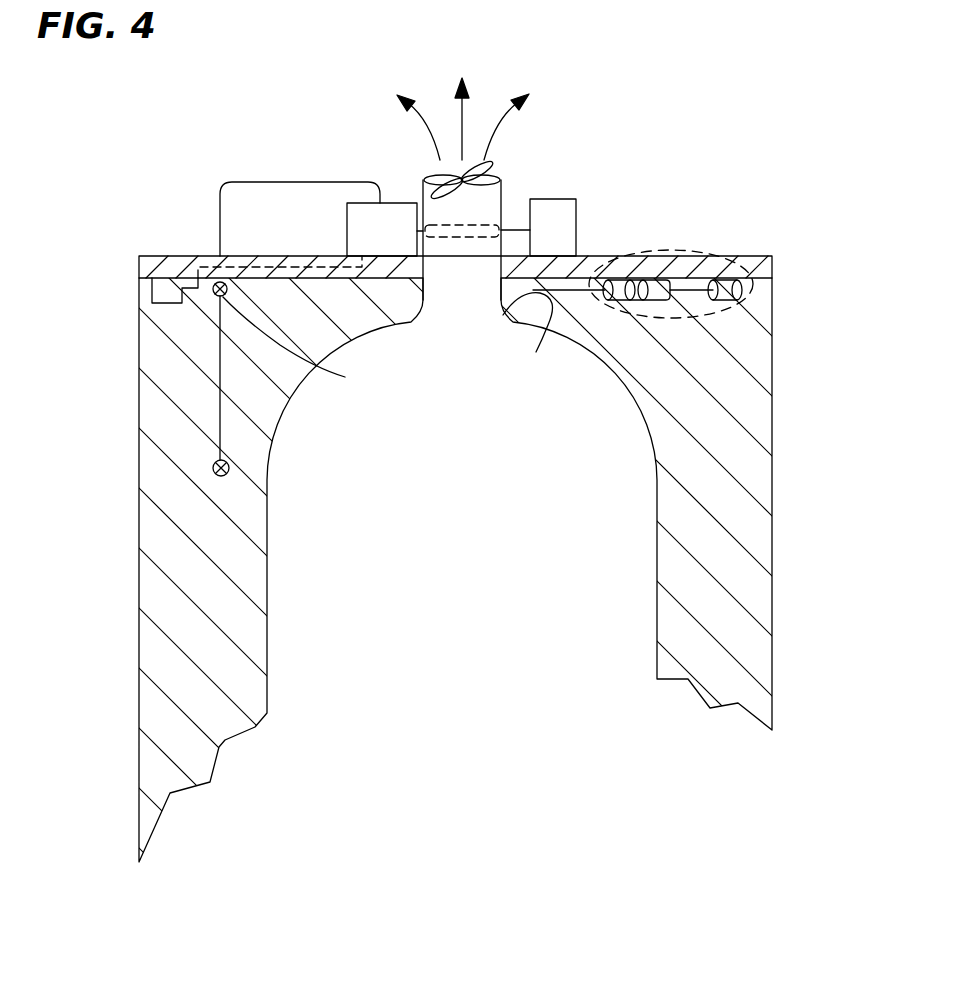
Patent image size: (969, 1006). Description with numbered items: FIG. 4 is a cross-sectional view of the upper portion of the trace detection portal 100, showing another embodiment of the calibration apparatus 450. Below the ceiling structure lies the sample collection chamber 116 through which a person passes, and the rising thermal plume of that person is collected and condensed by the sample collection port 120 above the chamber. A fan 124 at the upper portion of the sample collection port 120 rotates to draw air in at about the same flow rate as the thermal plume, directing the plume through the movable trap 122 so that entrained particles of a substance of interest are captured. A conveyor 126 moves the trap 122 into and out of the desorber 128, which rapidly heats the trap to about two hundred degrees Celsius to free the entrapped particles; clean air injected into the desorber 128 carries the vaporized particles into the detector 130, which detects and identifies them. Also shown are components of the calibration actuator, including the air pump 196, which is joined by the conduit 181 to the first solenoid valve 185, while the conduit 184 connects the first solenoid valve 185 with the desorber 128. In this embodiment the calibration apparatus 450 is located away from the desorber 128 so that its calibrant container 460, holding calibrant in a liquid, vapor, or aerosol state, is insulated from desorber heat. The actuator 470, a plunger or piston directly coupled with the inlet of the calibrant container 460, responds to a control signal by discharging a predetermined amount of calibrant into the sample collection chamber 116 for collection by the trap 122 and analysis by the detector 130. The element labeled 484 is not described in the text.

The trace detection portal 100 is at (170, 174).
The sample collection chamber 116 is at (267, 582).
The sample collection port 120 is at (442, 318).
The movable trap 122 is at (485, 220).
The fan 124 is at (480, 170).
The conveyor 126 is at (563, 222).
The desorber 128 is at (403, 249).
The detector 130 is at (167, 288).
The conduit 181 is at (220, 420).
The conduit 184 is at (275, 182).
The first solenoid valve 185 is at (308, 345).
The air pump 196 is at (230, 475).
The calibration apparatus 450 is at (683, 251).
The calibrant container 460 is at (613, 302).
The actuator 470 is at (735, 300).
The channel opening 484 is at (536, 352).